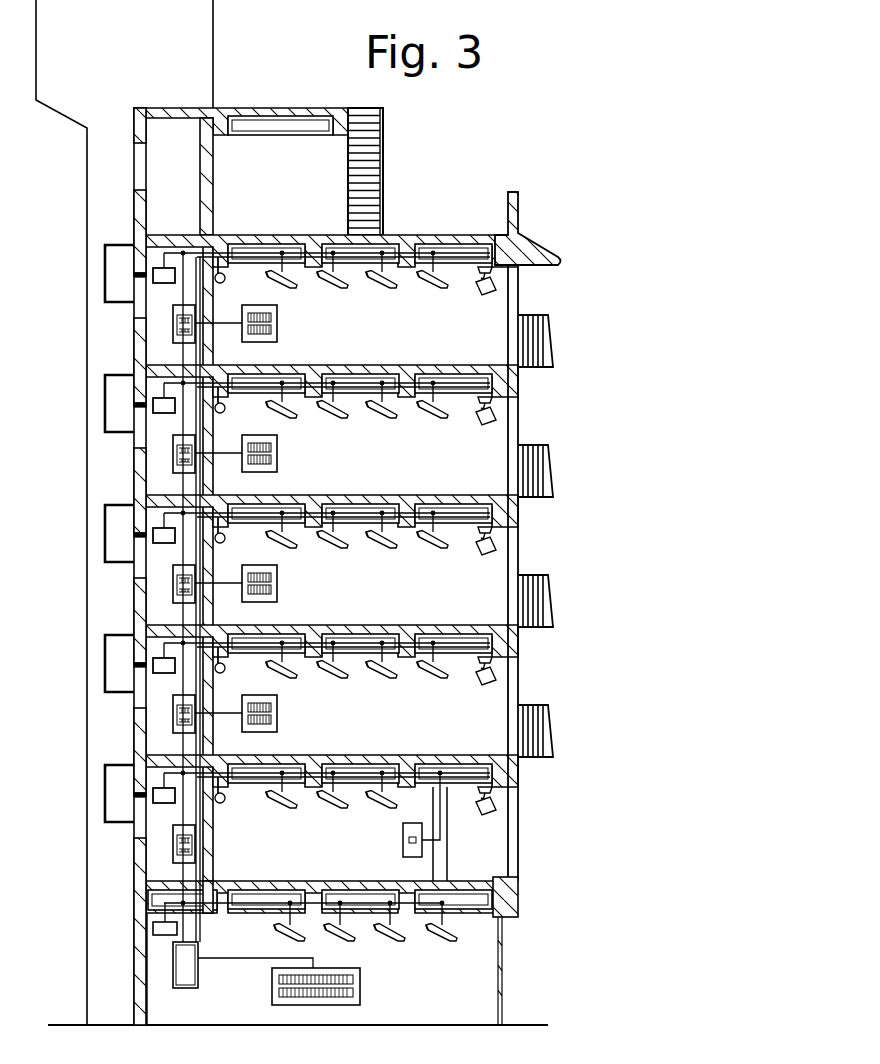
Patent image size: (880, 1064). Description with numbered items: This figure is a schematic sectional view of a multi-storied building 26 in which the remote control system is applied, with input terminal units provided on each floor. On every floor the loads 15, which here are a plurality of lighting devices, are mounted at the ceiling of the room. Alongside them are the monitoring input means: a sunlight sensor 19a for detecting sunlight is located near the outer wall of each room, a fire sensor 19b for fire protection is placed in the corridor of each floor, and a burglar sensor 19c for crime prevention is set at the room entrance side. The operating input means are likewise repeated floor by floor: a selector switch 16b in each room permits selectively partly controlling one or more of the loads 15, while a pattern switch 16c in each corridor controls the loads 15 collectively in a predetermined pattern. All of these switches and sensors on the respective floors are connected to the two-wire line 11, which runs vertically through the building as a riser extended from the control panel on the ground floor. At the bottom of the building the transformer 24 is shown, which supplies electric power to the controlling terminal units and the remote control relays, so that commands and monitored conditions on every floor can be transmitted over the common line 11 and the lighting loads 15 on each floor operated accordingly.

The building 26 is at (133, 232).
The fire sensor 19b is at (153, 276).
The pattern switch 16c is at (173, 323).
The burglar sensor 19c is at (224, 282).
The selector switch 16b is at (277, 330).
The loads 15 is at (390, 288).
The sunlight sensor 19a is at (497, 288).
The two-wire line 11 is at (200, 932).
The transformer 24 is at (176, 988).